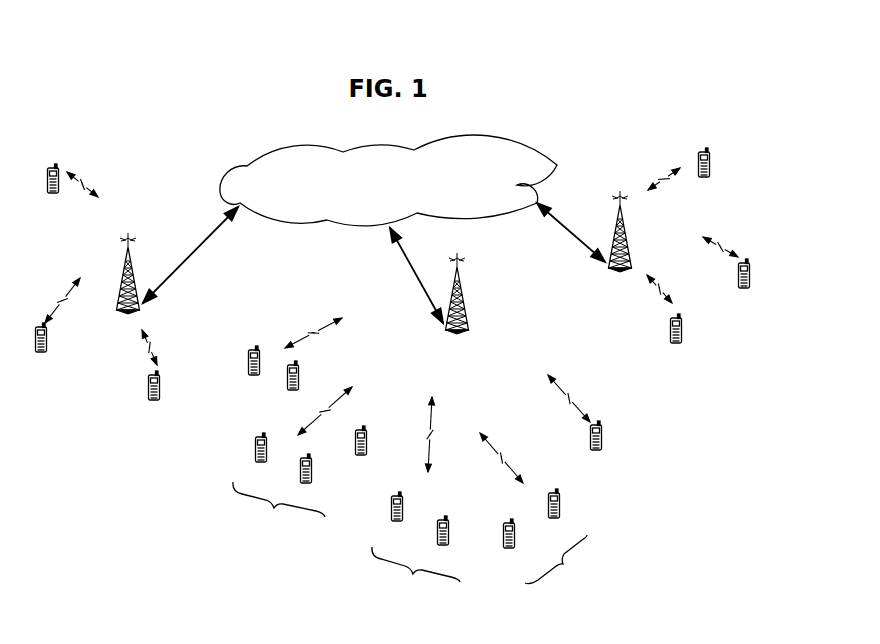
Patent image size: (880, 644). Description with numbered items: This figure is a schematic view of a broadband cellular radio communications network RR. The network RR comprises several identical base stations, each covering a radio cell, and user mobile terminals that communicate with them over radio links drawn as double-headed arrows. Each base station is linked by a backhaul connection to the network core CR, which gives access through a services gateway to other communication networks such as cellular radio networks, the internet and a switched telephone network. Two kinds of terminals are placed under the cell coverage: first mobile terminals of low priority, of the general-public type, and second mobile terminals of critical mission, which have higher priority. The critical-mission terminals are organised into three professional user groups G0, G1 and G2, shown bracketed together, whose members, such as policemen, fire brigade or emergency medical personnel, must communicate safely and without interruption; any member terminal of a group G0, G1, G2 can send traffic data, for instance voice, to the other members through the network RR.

The network core CR is at (515, 158).
The broadband cellular radio communications network RR is at (113, 157).
The critical mission group G0 is at (279, 504).
The critical mission group G1 is at (416, 569).
The critical mission group G2 is at (556, 561).